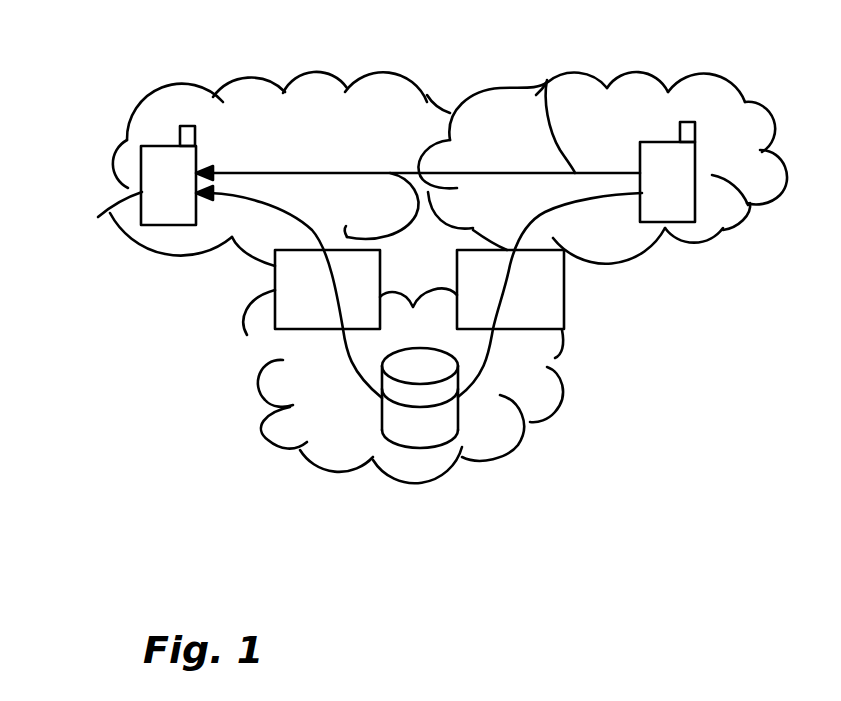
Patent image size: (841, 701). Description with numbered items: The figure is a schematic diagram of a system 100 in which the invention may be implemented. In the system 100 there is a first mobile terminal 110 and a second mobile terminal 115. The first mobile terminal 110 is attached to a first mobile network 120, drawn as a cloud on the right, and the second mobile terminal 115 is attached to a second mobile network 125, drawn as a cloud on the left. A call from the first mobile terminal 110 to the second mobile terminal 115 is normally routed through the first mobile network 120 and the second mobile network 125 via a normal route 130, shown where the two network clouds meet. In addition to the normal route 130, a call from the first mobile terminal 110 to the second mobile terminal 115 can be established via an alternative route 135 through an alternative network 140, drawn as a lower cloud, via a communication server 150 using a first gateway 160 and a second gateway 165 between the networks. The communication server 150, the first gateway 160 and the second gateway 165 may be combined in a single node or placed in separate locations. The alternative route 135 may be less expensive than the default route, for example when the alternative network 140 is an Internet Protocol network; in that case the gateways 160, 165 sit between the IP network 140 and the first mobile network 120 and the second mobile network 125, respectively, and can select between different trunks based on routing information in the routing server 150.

The system 100 is at (84, 31).
The first mobile terminal 110 is at (723, 230).
The second mobile terminal 115 is at (98, 190).
The first mobile network 120 is at (690, 78).
The second mobile network 125 is at (310, 76).
The normal route 130 is at (547, 82).
The alternative route 135 is at (550, 208).
The alternative network 140 is at (260, 428).
The communication server 150 is at (473, 460).
The first gateway 160 is at (564, 295).
The second gateway 165 is at (273, 297).